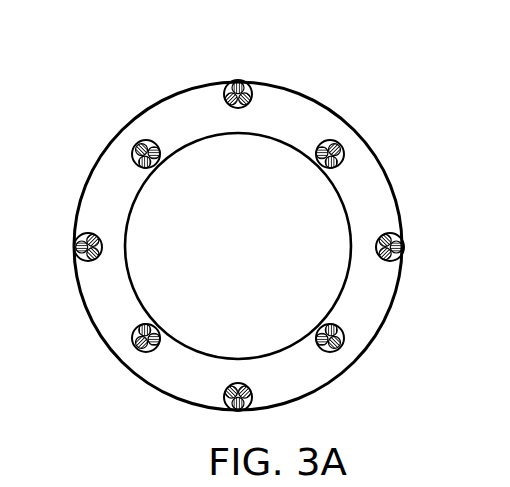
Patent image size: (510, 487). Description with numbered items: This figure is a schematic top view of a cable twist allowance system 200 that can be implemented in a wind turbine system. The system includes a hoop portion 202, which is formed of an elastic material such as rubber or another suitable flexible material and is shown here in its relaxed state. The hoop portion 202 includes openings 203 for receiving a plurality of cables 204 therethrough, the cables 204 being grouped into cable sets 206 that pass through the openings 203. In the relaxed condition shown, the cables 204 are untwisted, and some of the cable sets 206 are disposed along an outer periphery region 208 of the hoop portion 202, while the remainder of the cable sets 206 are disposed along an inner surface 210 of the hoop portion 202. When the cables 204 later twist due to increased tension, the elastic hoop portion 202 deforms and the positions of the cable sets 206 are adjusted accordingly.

The cable twist allowance system 200 is at (121, 54).
The hoop portion 202 is at (379, 122).
The openings 203 is at (401, 237).
The cables 204 is at (338, 325).
The cable sets 206 is at (356, 336).
The outer periphery region 208 is at (397, 176).
The inner surface 210 is at (137, 183).